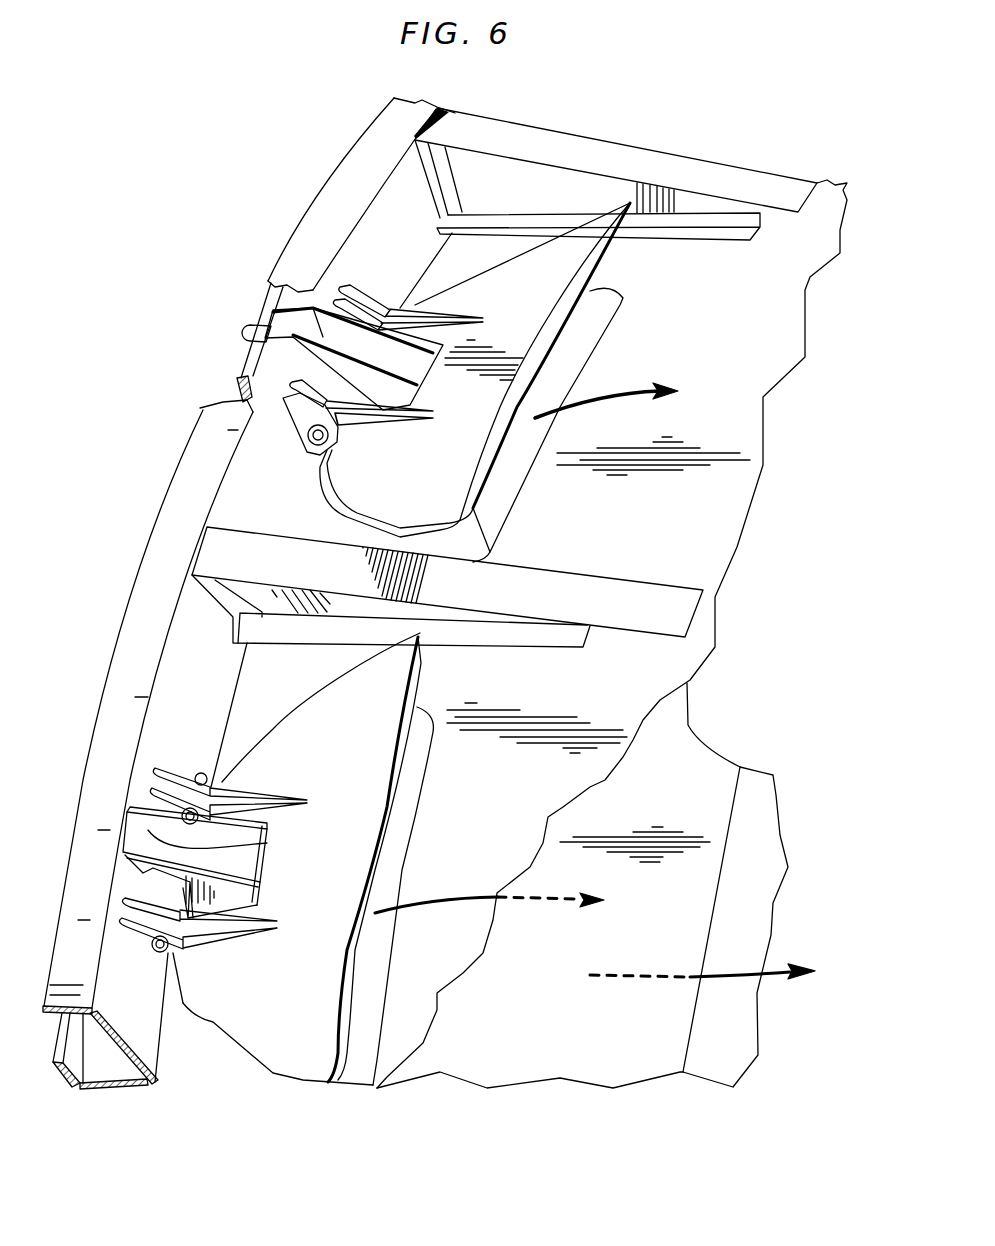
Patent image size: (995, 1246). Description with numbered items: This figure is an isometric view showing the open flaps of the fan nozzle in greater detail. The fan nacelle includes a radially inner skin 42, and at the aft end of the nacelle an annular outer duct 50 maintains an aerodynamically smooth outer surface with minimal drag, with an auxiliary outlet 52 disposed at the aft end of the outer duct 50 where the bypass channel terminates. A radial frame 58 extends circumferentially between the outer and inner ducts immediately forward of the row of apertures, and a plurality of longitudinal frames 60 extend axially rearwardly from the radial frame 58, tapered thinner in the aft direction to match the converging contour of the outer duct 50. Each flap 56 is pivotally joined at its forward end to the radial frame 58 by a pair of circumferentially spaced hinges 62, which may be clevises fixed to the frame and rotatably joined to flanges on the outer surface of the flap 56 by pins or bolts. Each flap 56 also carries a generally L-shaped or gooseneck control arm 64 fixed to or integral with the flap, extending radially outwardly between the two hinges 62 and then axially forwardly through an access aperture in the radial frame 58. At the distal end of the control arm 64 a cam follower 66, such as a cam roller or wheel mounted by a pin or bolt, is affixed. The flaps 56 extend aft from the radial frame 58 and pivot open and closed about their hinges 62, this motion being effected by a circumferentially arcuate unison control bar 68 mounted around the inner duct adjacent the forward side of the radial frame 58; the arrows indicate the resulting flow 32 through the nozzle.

The airflow 32 is at (748, 970).
The inner skin 42 is at (641, 692).
The outer duct 50 is at (511, 1064).
The auxiliary outlet 52 is at (688, 1053).
The flap 56 is at (437, 495).
The radial frame 58 is at (139, 1004).
The longitudinal frame 60 is at (577, 573).
The hinge 62 is at (176, 773).
The control arm 64 is at (368, 372).
The cam follower 66 is at (248, 329).
The control bar 68 is at (234, 393).